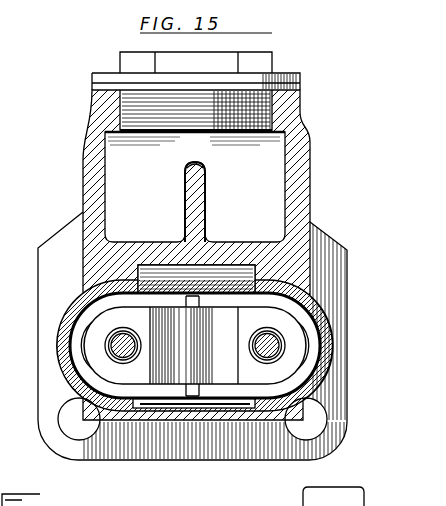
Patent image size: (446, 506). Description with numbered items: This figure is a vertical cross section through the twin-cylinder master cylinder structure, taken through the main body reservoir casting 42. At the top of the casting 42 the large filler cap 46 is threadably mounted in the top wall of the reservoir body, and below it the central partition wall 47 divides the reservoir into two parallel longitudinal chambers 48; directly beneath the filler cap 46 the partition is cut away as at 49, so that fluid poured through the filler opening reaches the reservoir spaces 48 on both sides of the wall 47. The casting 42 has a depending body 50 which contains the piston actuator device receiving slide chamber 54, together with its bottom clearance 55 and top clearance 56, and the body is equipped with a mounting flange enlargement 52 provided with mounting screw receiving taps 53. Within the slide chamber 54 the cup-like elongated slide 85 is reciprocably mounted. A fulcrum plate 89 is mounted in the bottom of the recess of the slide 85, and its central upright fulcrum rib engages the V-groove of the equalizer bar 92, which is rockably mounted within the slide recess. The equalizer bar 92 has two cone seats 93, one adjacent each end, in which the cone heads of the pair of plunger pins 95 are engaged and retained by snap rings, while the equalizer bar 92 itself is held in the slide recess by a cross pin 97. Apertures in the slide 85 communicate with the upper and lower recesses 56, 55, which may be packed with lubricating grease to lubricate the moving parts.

The main body reservoir casting 42 is at (220, 289).
The filler cap 46 is at (256, 63).
The central partition wall 47 is at (192, 190).
The longitudinal chambers 48 is at (121, 193).
The cut away portion 49 is at (204, 161).
The depending body 50 is at (300, 279).
The mounting flange enlargement 52 is at (322, 248).
The mounting screw receiving taps 53 is at (0, 412).
The slide chamber 54 is at (105, 292).
The bottom clearance 55 is at (192, 352).
The top clearance 56 is at (197, 282).
The cup-like elongated slide 85 is at (310, 325).
The fulcrum plate 89 is at (245, 270).
The equalizer bar 92 is at (227, 313).
The cone seats 93 is at (113, 327).
The plunger pins 95 is at (268, 346).
The cross pin 97 is at (157, 408).